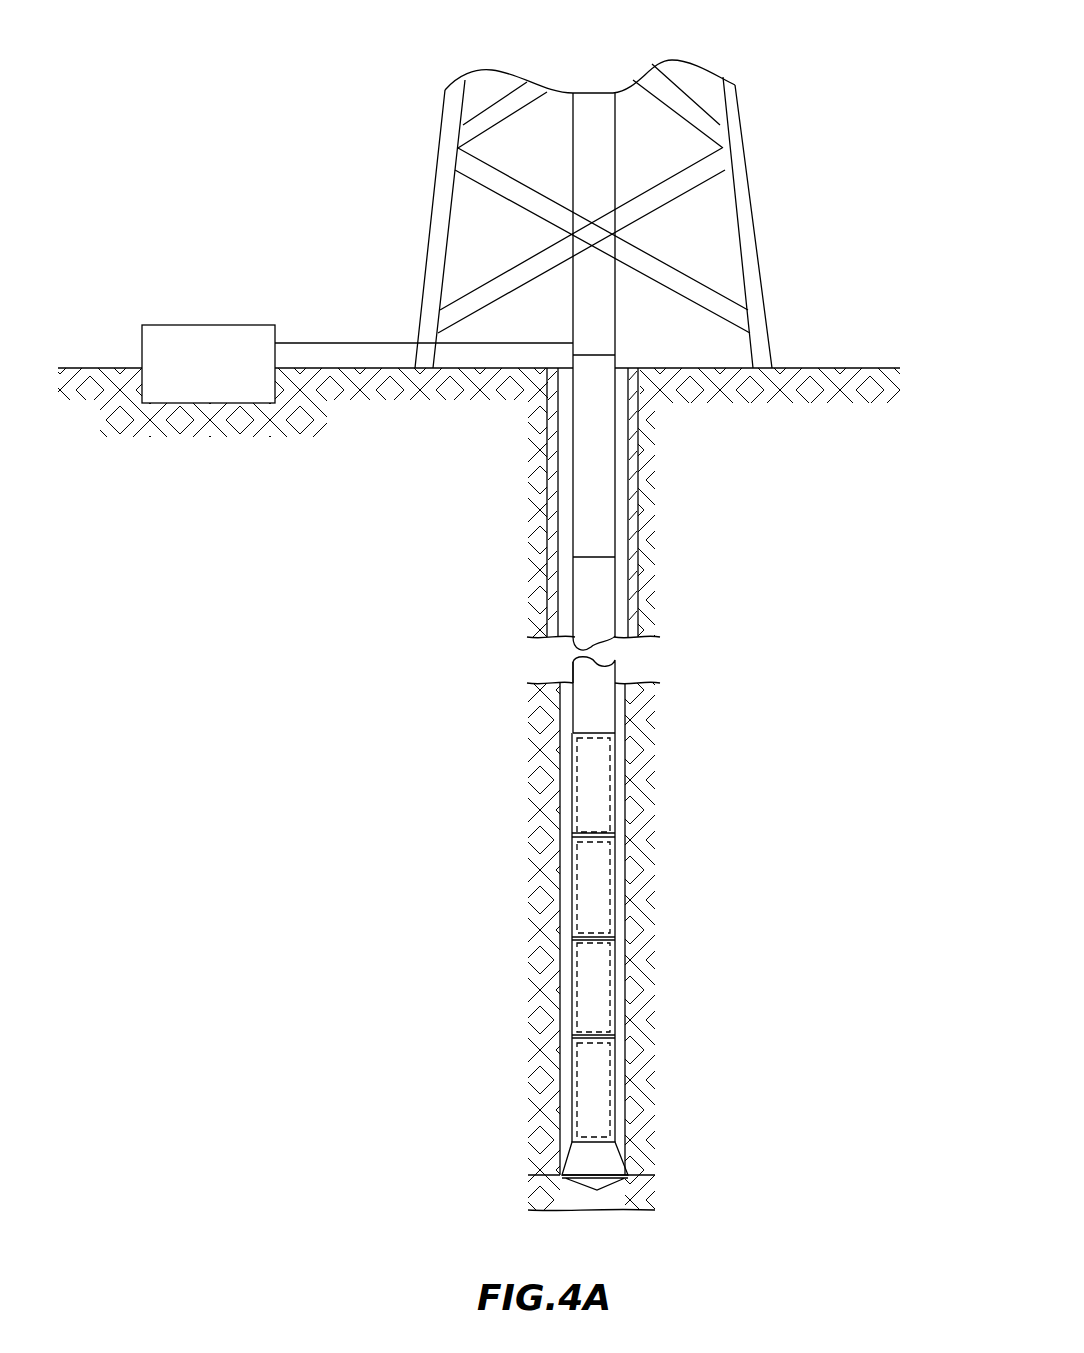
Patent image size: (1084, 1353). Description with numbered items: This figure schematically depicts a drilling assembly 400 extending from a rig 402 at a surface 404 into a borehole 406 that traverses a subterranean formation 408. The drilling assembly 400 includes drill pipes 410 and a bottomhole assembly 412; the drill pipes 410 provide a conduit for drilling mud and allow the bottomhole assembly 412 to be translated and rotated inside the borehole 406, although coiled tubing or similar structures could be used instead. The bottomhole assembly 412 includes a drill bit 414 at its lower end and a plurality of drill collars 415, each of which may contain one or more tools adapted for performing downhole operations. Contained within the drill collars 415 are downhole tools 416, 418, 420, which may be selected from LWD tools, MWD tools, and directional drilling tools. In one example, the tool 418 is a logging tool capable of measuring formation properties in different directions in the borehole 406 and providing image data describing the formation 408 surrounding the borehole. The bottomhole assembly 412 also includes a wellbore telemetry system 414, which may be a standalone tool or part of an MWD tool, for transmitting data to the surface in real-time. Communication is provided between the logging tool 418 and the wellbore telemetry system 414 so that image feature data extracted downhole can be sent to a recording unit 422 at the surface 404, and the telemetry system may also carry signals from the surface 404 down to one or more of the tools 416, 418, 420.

The drilling assembly 400 is at (641, 264).
The rig 402 is at (757, 228).
The surface 404 is at (812, 368).
The borehole 406 is at (623, 718).
The subterranean formation 408 is at (637, 752).
The drill pipes 410 is at (615, 458).
The bottomhole assembly 412 is at (594, 995).
The drill bit / wellbore telemetry system 414 is at (595, 867).
The drill collars 415 is at (572, 777).
The downhole tool 416 is at (597, 1090).
The logging tool 418 is at (595, 978).
The downhole tool 420 is at (595, 788).
The recording unit 422 is at (226, 379).